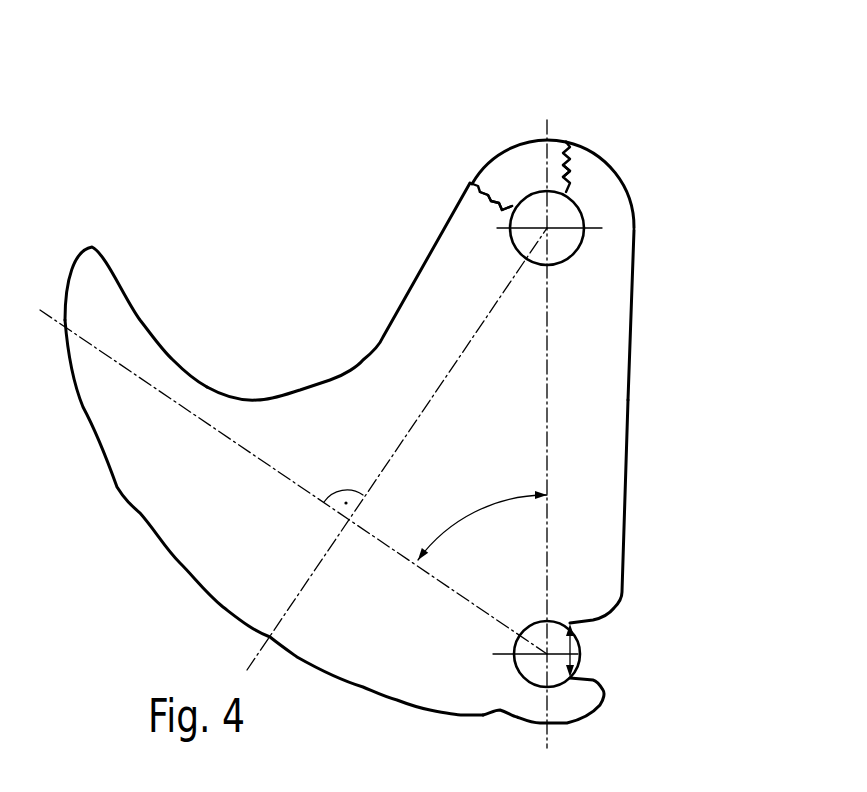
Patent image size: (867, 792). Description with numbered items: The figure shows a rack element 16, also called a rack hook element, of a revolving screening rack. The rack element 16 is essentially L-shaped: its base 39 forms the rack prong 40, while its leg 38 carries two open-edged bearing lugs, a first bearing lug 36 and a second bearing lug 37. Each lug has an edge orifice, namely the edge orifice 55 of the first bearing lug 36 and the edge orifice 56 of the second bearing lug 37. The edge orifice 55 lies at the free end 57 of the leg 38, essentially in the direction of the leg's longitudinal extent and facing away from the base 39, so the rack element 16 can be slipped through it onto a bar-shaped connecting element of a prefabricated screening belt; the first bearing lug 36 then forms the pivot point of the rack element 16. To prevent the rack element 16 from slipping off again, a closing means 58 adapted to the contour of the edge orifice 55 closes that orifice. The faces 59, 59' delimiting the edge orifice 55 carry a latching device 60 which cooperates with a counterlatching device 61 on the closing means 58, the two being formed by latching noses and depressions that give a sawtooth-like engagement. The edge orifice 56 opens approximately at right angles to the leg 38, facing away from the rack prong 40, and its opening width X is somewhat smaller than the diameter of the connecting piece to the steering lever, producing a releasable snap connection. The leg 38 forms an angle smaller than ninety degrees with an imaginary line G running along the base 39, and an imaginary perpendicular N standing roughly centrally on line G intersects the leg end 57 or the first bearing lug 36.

The rack element 16 is at (603, 466).
The first bearing lug 36 is at (578, 202).
The second bearing lug 37 is at (560, 612).
The leg 38 is at (608, 288).
The base 39 is at (157, 500).
The rack prong 40 is at (103, 307).
The edge orifice 55 is at (568, 152).
The edge orifice 56 is at (618, 626).
The free end 57 is at (565, 116).
The closing means 58 is at (495, 175).
The face 59 is at (459, 259).
The face 59' is at (630, 128).
The latching device 60 is at (497, 228).
The counterlatching device 61 is at (507, 182).
The imaginary line G is at (233, 443).
The imaginary perpendicular N is at (403, 437).
The opening width X is at (573, 657).